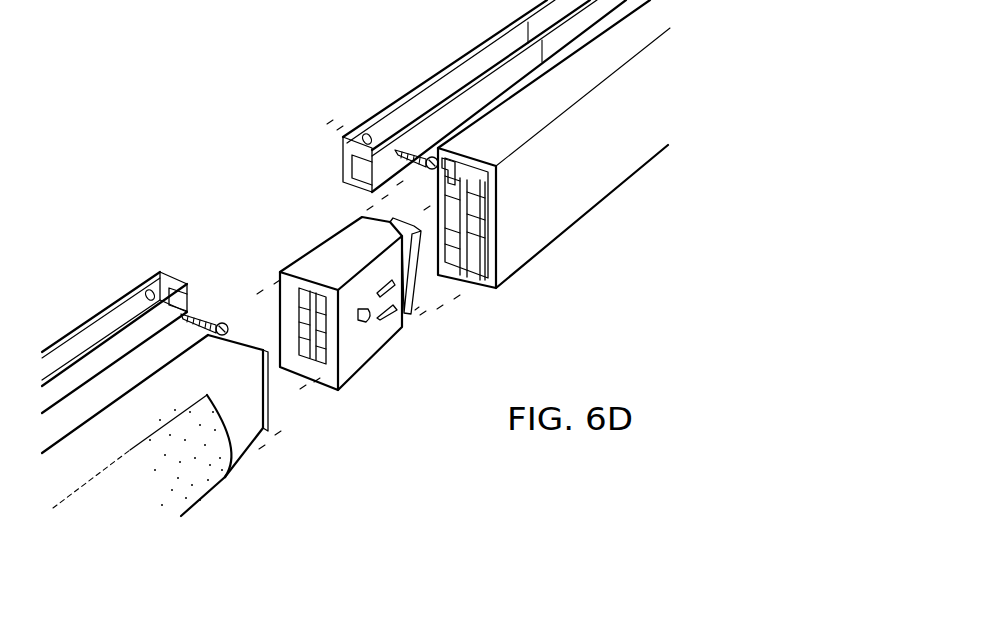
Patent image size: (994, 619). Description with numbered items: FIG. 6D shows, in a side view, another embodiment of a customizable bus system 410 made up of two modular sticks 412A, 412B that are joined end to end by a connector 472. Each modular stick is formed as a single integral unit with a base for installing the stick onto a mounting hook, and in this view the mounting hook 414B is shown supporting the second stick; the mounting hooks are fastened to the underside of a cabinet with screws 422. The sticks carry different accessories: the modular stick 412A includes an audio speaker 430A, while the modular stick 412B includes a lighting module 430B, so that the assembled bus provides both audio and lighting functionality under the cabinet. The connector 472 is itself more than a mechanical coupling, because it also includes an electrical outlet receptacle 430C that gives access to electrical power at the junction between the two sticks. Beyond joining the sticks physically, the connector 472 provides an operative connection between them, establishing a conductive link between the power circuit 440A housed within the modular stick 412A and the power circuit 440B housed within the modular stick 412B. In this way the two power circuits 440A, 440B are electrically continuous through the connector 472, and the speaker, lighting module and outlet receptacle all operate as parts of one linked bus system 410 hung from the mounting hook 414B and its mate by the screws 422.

The bus system 410 is at (179, 205).
The modular stick 412A is at (154, 551).
The modular stick 412B is at (697, 144).
The mounting hook 414B is at (87, 340).
The screws 422 is at (209, 327).
The audio speaker 430A is at (188, 484).
The lighting module 430B is at (572, 195).
The electrical outlet receptacle 430C is at (373, 333).
The power circuit 440A is at (273, 398).
The power circuit 440B is at (458, 242).
The connector 472 is at (366, 384).